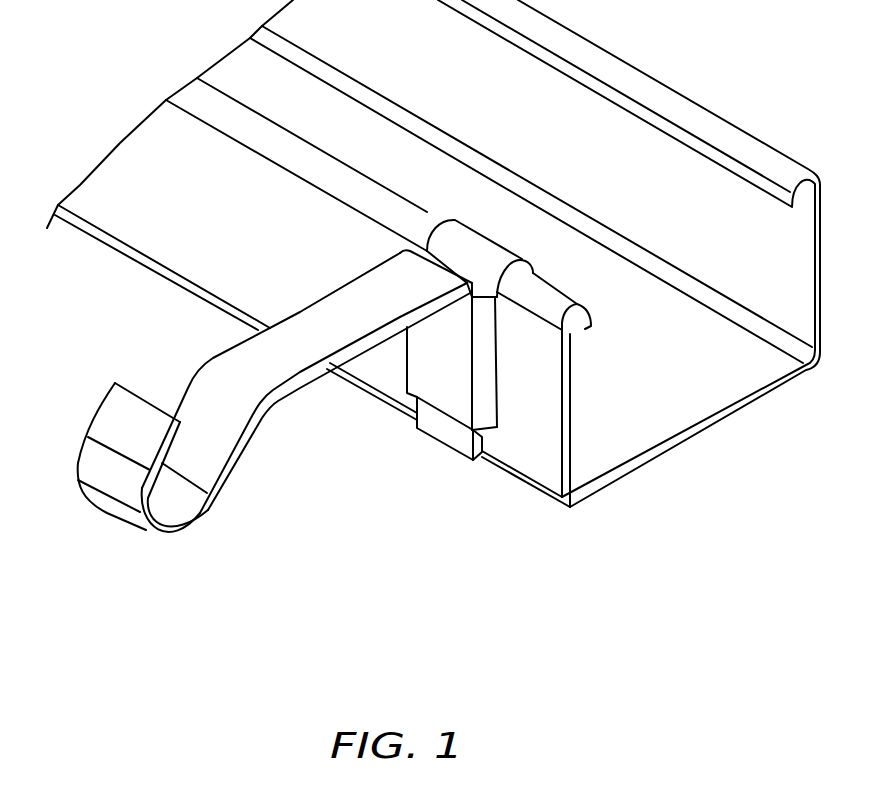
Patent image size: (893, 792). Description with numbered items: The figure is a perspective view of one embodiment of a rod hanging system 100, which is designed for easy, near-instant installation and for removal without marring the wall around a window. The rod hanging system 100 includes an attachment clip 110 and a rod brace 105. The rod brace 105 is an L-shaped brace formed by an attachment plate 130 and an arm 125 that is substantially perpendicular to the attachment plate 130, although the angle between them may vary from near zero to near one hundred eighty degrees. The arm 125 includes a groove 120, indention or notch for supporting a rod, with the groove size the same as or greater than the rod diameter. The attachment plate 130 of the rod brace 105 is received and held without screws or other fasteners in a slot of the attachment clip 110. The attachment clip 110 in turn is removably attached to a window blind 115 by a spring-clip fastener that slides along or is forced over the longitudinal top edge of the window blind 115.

The rod hanging system 100 is at (275, 439).
The rod brace 105 is at (100, 413).
The attachment clip 110 is at (433, 362).
The window blind 115 is at (105, 243).
The groove 120 is at (158, 541).
The arm 125 is at (220, 360).
The attachment plate 130 is at (447, 447).